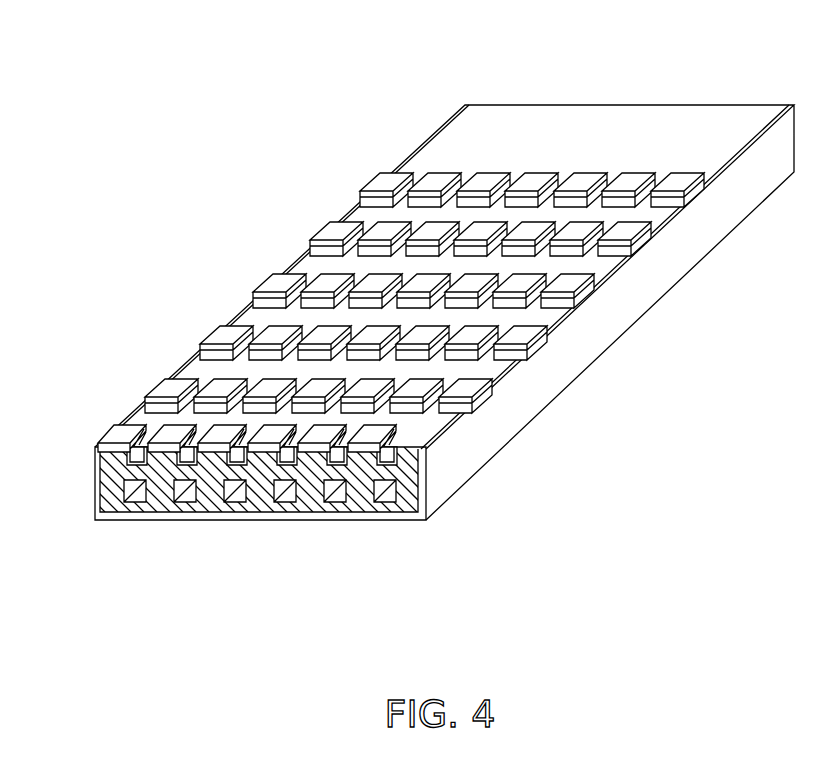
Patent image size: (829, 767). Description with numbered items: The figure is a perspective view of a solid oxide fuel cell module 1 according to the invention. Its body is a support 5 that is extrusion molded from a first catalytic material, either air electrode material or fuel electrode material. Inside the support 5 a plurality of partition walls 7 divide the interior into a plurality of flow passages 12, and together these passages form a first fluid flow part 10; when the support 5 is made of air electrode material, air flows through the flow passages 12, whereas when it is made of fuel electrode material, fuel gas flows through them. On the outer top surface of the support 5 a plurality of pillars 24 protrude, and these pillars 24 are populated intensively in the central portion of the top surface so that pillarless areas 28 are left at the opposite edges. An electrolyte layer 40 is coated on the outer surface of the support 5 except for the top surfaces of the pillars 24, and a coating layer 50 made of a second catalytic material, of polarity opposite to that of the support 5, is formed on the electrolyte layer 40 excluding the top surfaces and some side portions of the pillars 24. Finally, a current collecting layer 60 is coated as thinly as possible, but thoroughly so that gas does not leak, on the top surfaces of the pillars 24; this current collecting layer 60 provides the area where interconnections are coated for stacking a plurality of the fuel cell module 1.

The solid oxide fuel cell module 1 is at (407, 331).
The support 5 is at (409, 491).
The partition walls 7 is at (355, 493).
The first fluid flow part 10 is at (417, 331).
The flow passages 12 is at (235, 502).
The pillars 24 is at (235, 463).
The pillarless areas 28 is at (598, 130).
The electrolyte layer 40 is at (399, 370).
The coating layer 50 is at (597, 268).
The current collecting layer 60 is at (468, 392).